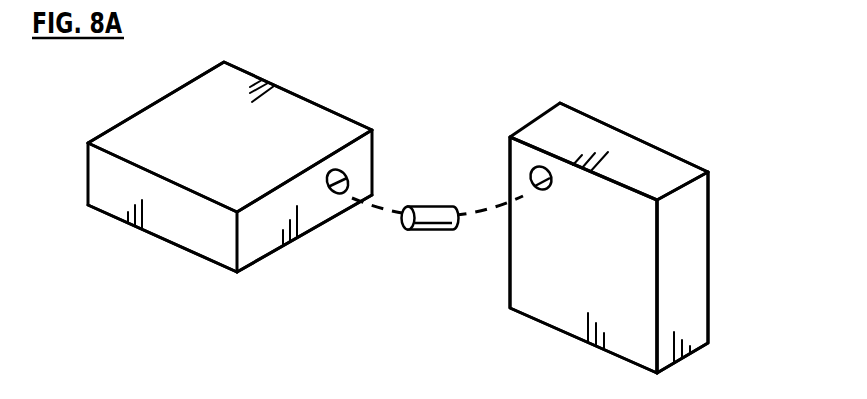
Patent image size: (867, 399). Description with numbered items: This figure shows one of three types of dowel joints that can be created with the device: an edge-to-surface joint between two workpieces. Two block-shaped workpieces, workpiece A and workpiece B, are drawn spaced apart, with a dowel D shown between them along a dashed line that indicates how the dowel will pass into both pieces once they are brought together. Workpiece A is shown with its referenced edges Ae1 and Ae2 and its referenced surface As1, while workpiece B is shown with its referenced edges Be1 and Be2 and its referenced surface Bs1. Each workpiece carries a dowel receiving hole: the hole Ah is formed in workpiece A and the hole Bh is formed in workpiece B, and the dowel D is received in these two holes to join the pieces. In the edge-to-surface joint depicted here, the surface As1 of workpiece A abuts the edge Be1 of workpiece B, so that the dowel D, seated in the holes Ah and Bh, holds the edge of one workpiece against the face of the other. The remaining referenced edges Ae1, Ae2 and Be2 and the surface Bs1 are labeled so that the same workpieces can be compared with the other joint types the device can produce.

The workpiece A is at (587, 267).
The workpiece B is at (225, 142).
The dowel D is at (437, 213).
The dowel receiving hole Ah is at (530, 178).
The dowel receiving hole Bh is at (348, 176).
The edge Ae1 is at (640, 155).
The edge Ae2 is at (693, 240).
The surface As1 is at (550, 305).
The surface Bs1 is at (182, 105).
The edge Be1 is at (260, 242).
The edge Be2 is at (198, 242).